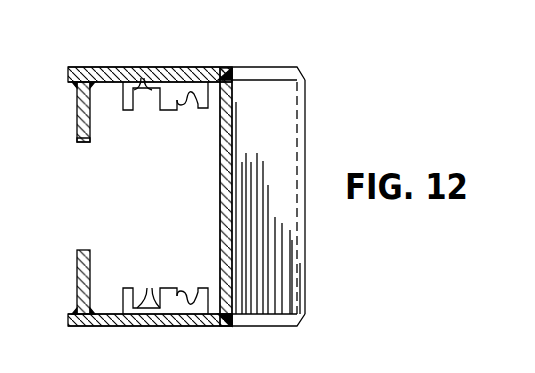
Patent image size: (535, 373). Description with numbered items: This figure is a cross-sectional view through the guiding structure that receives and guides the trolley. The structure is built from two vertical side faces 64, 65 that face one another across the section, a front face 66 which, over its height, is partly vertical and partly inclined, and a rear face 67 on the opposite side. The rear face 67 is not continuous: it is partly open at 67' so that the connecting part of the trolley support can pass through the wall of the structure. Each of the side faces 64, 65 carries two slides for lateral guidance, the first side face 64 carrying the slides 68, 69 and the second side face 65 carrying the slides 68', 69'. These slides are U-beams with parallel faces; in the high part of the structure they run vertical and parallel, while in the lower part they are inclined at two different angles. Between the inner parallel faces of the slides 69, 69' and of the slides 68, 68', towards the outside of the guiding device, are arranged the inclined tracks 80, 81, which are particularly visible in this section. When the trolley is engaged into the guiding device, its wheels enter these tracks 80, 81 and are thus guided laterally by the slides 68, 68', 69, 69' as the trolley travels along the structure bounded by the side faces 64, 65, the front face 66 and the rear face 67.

The vertical side face 64 is at (125, 323).
The vertical side face 65 is at (104, 70).
The front face 66 is at (296, 130).
The rear face 67 is at (63, 198).
The opening of the rear face 67' is at (68, 156).
The slide 68 is at (125, 283).
The slide 68' is at (131, 113).
The slide 69 is at (171, 280).
The slide 69' is at (172, 116).
The inclined track 80 is at (195, 88).
The inclined track 81 is at (144, 78).